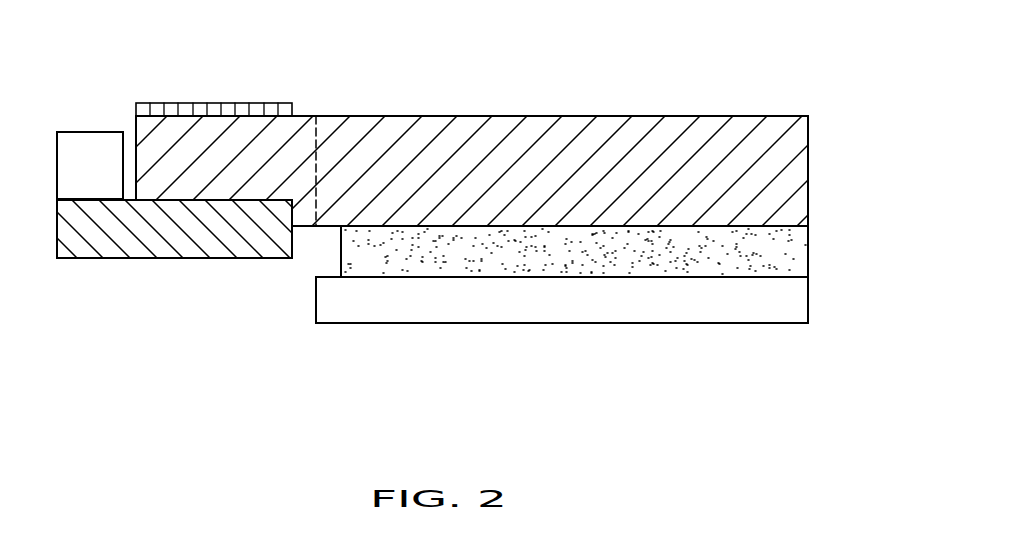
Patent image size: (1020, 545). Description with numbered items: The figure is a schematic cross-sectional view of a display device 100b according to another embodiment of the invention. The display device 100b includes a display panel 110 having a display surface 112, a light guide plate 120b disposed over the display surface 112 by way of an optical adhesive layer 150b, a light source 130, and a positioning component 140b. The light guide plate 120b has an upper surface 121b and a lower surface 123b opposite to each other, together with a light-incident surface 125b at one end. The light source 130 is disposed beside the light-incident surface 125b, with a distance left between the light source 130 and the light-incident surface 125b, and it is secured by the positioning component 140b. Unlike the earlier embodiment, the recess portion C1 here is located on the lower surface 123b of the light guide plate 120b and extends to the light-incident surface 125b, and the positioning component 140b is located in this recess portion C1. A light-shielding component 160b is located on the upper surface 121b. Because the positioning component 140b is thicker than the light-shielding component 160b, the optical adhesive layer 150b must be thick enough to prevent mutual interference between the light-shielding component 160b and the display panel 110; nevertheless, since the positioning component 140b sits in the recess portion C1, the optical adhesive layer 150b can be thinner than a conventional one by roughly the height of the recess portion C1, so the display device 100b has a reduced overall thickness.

The display device 100b is at (772, 353).
The display panel 110 is at (795, 300).
The display surface 112 is at (739, 277).
The light guide plate 120b is at (822, 175).
The upper surface 121b is at (728, 115).
The lower surface 123b is at (670, 228).
The light-incident surface 125b is at (134, 156).
The light source 130 is at (85, 147).
The positioning component 140b is at (95, 258).
The optical adhesive layer 150b is at (409, 262).
The light-shielding component 160b is at (213, 110).
The recess portion C1 is at (247, 213).